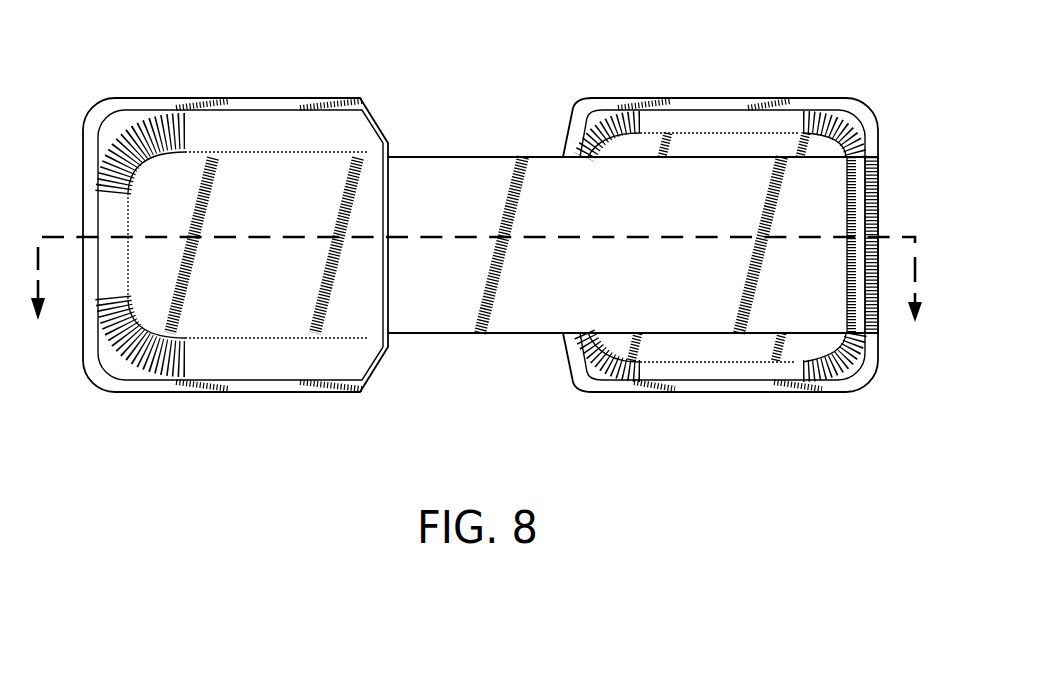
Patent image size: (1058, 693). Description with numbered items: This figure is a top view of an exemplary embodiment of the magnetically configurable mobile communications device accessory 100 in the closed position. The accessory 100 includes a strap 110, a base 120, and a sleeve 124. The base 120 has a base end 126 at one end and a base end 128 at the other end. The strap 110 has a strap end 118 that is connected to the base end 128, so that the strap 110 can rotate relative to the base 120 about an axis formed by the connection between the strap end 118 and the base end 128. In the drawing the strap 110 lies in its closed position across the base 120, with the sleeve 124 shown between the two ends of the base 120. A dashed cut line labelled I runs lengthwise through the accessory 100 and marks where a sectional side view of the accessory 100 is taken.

The magnetically configurable mobile communications device accessory 100 is at (483, 237).
The strap 110 is at (512, 157).
The strap end 118 is at (749, 260).
The base 120 is at (235, 237).
The sleeve 124 is at (280, 327).
The base end 126 is at (133, 392).
The base end 128 is at (823, 392).